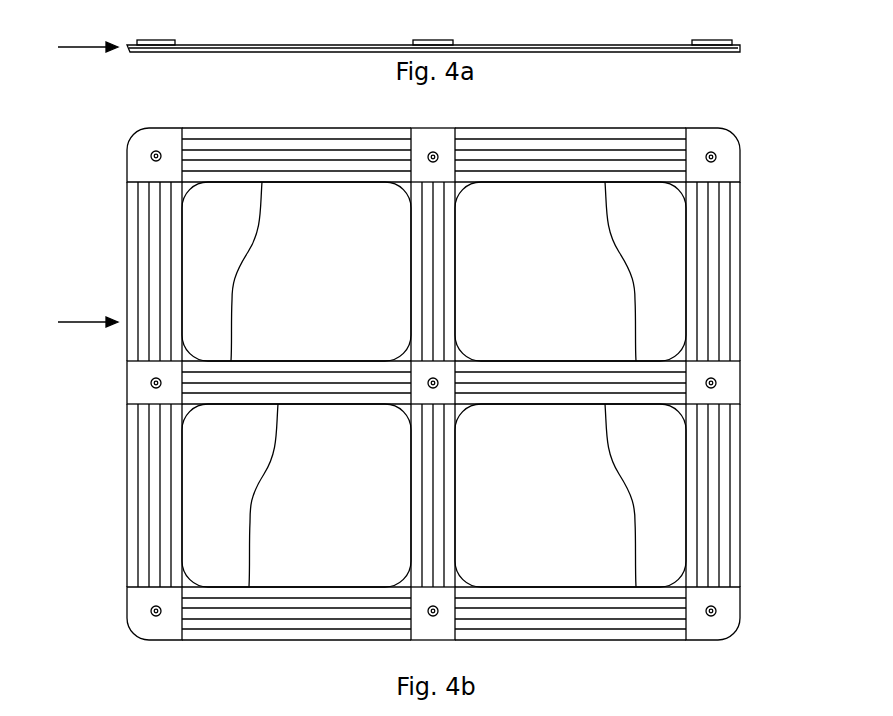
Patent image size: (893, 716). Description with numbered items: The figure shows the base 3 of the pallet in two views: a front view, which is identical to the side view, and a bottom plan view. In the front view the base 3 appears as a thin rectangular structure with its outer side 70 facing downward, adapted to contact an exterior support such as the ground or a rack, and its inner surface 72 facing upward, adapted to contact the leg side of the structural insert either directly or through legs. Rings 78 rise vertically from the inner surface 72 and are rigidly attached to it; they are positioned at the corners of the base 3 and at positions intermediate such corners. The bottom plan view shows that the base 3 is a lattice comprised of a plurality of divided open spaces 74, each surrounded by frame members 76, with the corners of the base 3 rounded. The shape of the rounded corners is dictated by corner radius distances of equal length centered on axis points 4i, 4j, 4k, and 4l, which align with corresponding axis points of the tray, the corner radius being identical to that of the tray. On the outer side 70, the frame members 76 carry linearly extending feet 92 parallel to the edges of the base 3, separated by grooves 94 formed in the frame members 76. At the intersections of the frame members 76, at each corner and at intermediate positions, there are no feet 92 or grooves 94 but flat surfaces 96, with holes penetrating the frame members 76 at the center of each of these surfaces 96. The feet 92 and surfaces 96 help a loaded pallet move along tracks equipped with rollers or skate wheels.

In FIG. 4A, the base 3 is at (76, 48).
In FIG. 4B, the base 3 is at (76, 324).
In FIG. 4A, the outer side 70 is at (615, 52).
In FIG. 4A, the inner surface 72 is at (605, 46).
In FIG. 4A, the rings 78 is at (170, 40).
In FIG. 4B, the feet 92 is at (226, 137).
In FIG. 4B, the grooves 94 is at (281, 145).
In FIG. 4B, the divided open spaces 74 is at (277, 288).
In FIG. 4B, the frame members 76 is at (182, 287).
In FIG. 4B, the flat surfaces 96 is at (160, 137).
In FIG. 4B, the axis point 4i is at (150, 156).
In FIG. 4B, the axis point 4j is at (150, 611).
In FIG. 4B, the axis point 4k is at (718, 612).
In FIG. 4B, the axis point 4l is at (718, 159).